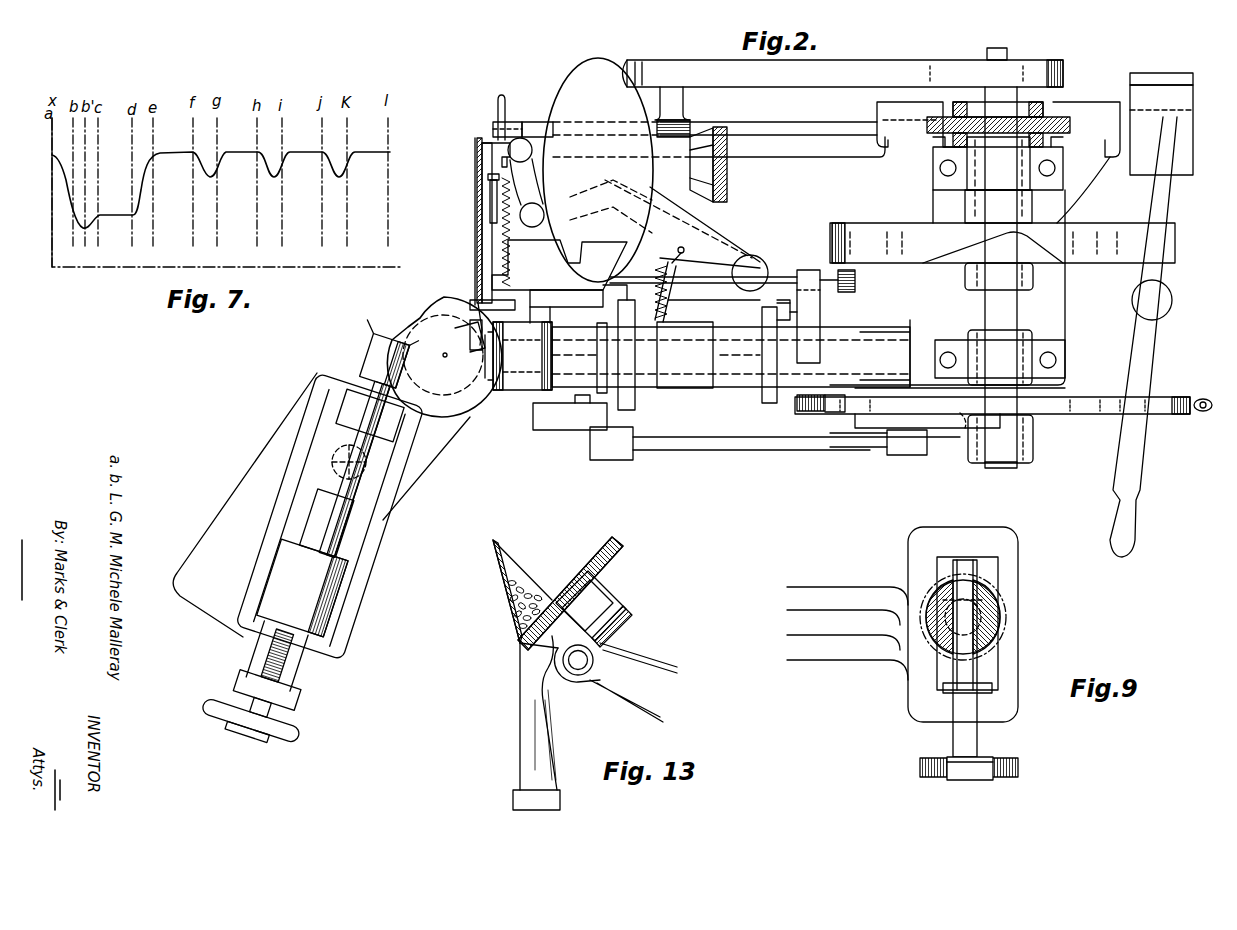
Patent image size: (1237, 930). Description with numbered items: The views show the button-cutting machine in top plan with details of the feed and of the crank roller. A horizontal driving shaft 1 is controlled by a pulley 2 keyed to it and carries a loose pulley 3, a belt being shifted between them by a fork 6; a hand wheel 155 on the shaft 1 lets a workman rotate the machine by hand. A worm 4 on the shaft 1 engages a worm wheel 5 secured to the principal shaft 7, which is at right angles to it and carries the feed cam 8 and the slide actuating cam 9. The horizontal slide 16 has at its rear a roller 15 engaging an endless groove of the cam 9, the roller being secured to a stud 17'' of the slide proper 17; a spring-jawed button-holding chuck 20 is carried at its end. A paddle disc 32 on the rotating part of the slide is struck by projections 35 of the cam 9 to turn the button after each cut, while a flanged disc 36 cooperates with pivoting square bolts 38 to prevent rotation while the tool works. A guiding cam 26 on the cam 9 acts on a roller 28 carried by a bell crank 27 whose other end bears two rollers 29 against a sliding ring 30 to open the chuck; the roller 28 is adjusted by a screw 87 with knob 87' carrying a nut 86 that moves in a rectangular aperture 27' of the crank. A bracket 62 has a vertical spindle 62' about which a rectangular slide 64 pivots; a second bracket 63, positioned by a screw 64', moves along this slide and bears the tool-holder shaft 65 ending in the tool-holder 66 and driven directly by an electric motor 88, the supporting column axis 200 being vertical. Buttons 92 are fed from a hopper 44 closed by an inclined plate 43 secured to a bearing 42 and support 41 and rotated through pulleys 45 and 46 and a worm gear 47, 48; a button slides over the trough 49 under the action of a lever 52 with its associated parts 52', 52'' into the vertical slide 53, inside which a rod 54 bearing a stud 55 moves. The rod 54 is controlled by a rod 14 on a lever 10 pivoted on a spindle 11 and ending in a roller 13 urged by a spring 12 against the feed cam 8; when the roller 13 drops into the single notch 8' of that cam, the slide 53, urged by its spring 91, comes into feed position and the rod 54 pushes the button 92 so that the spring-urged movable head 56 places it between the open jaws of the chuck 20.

In FIG. 2, the driving shaft 1 is at (873, 123).
In FIG. 2, the pulley 2 is at (1143, 82).
In FIG. 2, the loose pulley 3 is at (1176, 84).
In FIG. 2, the worm 4 is at (1043, 103).
In FIG. 2, the worm wheel 5 is at (1003, 120).
In FIG. 2, the fork 6 is at (1160, 190).
In FIG. 2, the principal shaft 7 is at (1000, 306).
In FIG. 2, the feed cam 8 is at (1002, 226).
In FIG. 2, the notch 8' is at (1010, 234).
In FIG. 2, the slide actuating cam 9 is at (1090, 408).
In FIG. 2, the lever 10 is at (728, 254).
In FIG. 2, the spindle 11 is at (762, 277).
In FIG. 2, the spring 12 is at (683, 252).
In FIG. 2, the roller 13 is at (854, 284).
In FIG. 2, the rod 14 is at (532, 192).
In FIG. 2, the roller 15 is at (832, 412).
In FIG. 2, the slide 16 is at (728, 385).
In FIG. 2, the slide proper 17 is at (892, 336).
In FIG. 2, the stud 17'' is at (800, 435).
In FIG. 2, the button-holding chuck 20 is at (433, 300).
In FIG. 2, the guiding cam 26 is at (958, 425).
In FIG. 2, the bell crank 27 is at (878, 455).
In FIG. 9, the bell crank 27 is at (847, 616).
In FIG. 9, the rectangular aperture 27' is at (983, 624).
In FIG. 9, the roller 28 is at (940, 590).
In FIG. 2, the rollers 29 is at (573, 393).
In FIG. 2, the sliding ring 30 is at (603, 388).
In FIG. 2, the paddle disc 32 is at (767, 400).
In FIG. 2, the projections 35 is at (1202, 411).
In FIG. 2, the flanged disc 36 is at (631, 395).
In FIG. 2, the square-shaped bolts 38 is at (585, 420).
In FIG. 13, the support 41 is at (525, 740).
In FIG. 13, the bearing 42 is at (612, 603).
In FIG. 2, the inclined plate 43 is at (575, 65).
In FIG. 13, the inclined plate 43 is at (600, 550).
In FIG. 13, the hopper 44 is at (506, 600).
In FIG. 2, the pulley 45 is at (956, 66).
In FIG. 2, the pulley 46 is at (651, 66).
In FIG. 13, the pulley 46 is at (600, 672).
In FIG. 2, the worm gear 47 is at (688, 124).
In FIG. 13, the worm gear 47 is at (578, 665).
In FIG. 2, the worm gear wheel 48 is at (720, 135).
In FIG. 13, the worm gear wheel 48 is at (632, 618).
In FIG. 2, the trough 49 is at (478, 275).
In FIG. 2, the lever 52 is at (806, 297).
In FIG. 2, the clip 52' is at (807, 278).
In FIG. 2, the clip 52'' is at (762, 312).
In FIG. 2, the vertical slide 53 is at (477, 140).
In FIG. 2, the rod 54 is at (484, 162).
In FIG. 2, the stud 55 is at (490, 232).
In FIG. 2, the movable head 56 is at (470, 338).
In FIG. 2, the bracket 62 is at (321, 505).
In FIG. 2, the vertical spindle 62' is at (320, 424).
In FIG. 2, the second bracket 63 is at (297, 470).
In FIG. 2, the rectangular slide 64 is at (255, 705).
In FIG. 2, the screw 64' is at (290, 659).
In FIG. 2, the tool-holder shaft 65 is at (362, 487).
In FIG. 2, the tool-holder 66 is at (378, 345).
In FIG. 9, the nut 86 is at (953, 602).
In FIG. 9, the screw 87 is at (1001, 658).
In FIG. 9, the controlling knob 87' is at (950, 775).
In FIG. 2, the electric motor 88 is at (330, 590).
In FIG. 2, the spring 91 is at (491, 196).
In FIG. 2, the buttons 92 is at (480, 338).
In FIG. 13, the buttons 92 is at (530, 582).
In FIG. 2, the hand wheel 155 is at (500, 106).
In FIG. 2, the axis 200 is at (447, 357).